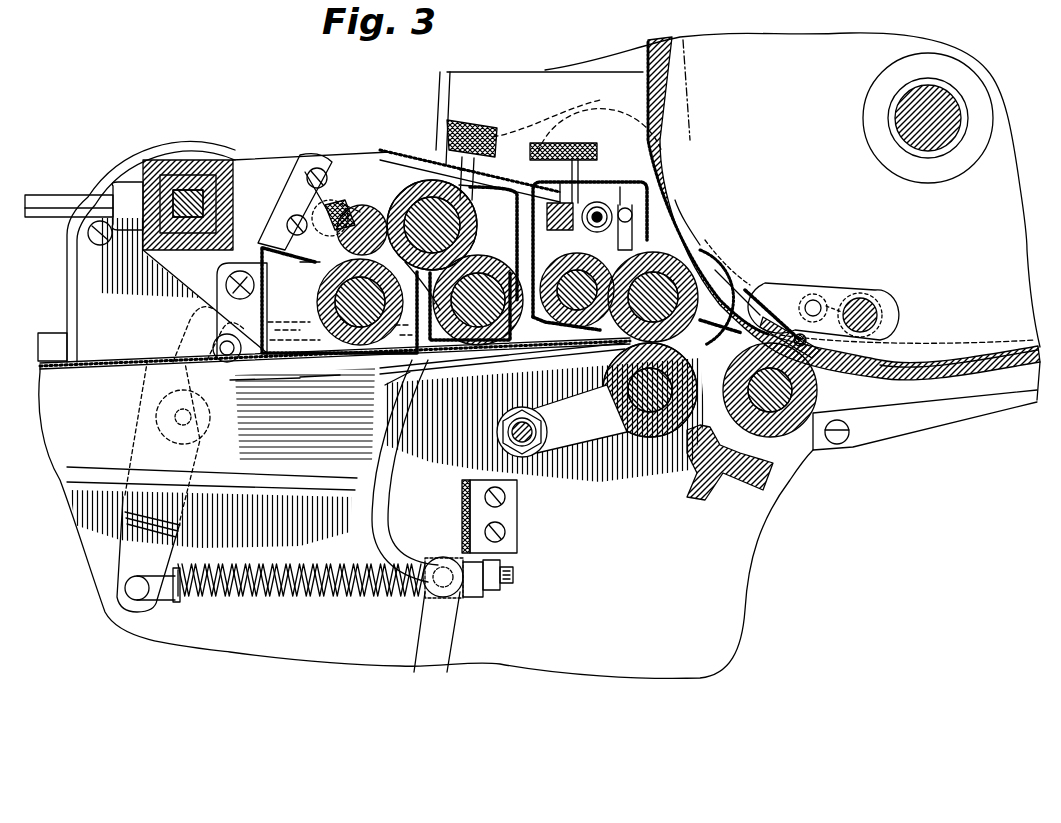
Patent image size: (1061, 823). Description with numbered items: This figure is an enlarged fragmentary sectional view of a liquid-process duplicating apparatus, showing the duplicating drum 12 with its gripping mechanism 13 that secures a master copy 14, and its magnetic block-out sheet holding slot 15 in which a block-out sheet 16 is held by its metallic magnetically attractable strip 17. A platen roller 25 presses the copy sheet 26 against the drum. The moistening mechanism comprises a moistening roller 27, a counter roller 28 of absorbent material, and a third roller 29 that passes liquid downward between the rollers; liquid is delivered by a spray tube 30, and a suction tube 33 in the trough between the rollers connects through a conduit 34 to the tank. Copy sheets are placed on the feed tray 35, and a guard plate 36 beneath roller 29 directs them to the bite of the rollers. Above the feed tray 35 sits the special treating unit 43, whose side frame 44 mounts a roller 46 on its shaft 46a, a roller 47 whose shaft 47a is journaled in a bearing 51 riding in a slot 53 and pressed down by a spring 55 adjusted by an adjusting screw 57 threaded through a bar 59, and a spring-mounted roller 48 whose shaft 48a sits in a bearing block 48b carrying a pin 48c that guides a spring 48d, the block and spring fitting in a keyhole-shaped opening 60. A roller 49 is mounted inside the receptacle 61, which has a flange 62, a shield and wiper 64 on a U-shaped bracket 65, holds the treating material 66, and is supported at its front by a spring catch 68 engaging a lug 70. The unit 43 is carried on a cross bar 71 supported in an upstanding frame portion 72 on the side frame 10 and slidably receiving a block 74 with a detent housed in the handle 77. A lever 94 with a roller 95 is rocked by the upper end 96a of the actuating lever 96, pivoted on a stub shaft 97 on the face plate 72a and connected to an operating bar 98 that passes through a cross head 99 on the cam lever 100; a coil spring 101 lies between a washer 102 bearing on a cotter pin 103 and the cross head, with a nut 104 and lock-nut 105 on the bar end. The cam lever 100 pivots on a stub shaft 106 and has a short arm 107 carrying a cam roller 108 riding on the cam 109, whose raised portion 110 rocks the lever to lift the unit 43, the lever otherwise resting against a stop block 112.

The side frame 10 is at (500, 82).
The duplicating drum 12 is at (912, 370).
The gripping mechanism 13 is at (797, 283).
The master copy 14 is at (718, 280).
The magnetic block-out sheet holding slot 15 is at (815, 370).
The block-out sheet 16 is at (745, 325).
The metallic magnetically attractable strip 17 is at (800, 335).
The platen roller 25 is at (795, 440).
The copy sheet 26 is at (562, 413).
The moistening roller 27 is at (705, 262).
The counter roller 28 is at (690, 458).
The third roller 29 is at (637, 390).
The spray tube 30 is at (590, 215).
The suction tube 33 is at (630, 255).
The conduit 34 is at (603, 163).
The feed tray 35 is at (426, 508).
The guard plate 36 is at (620, 365).
The special treating unit 43 is at (292, 143).
The side frame 44 is at (252, 160).
The roller 46 is at (490, 265).
The shaft 46a is at (502, 361).
The roller 47 is at (410, 205).
The shaft 47a is at (480, 213).
The roller 48 is at (368, 215).
The shaft 48a is at (365, 195).
The bearing block 48b is at (322, 236).
The pin 48c is at (332, 195).
The spring 48d is at (315, 210).
The roller 49 is at (318, 295).
The bearing 51 is at (412, 285).
The slot 53 is at (483, 230).
The spring 55 is at (415, 195).
The adjusting screw 57 is at (480, 150).
The bar 59 is at (422, 150).
The opening 60 is at (343, 205).
The receptacle 61 is at (262, 308).
The flange 62 is at (225, 276).
The shield and wiper 64 is at (310, 262).
The U-shaped bracket 65 is at (285, 228).
The treating material 66 is at (305, 384).
The spring catch 68 is at (455, 368).
The lug 70 is at (465, 370).
The cross bar 71 is at (185, 165).
The upstanding frame portion 72 is at (67, 260).
The face plate 72a is at (88, 295).
The block 74 is at (205, 170).
The handle 77 is at (75, 200).
The lever 94 is at (185, 300).
The roller 95 is at (265, 385).
The actuating lever 96 is at (125, 507).
The upper end 96a is at (192, 327).
The stub shaft 97 is at (192, 417).
The operating bar 98 is at (140, 600).
The cross head 99 is at (465, 590).
The cam lever 100 is at (372, 530).
The coil spring 101 is at (330, 565).
The washer 102 is at (185, 566).
The cotter pin 103 is at (176, 602).
The nut 104 is at (490, 585).
The lock-nut 105 is at (513, 568).
The stub shaft 106 is at (607, 112).
The short arm 107 is at (690, 148).
The cam roller 108 is at (682, 222).
The cam 109 is at (690, 45).
The raised portion 110 is at (700, 232).
The stop block 112 is at (470, 485).